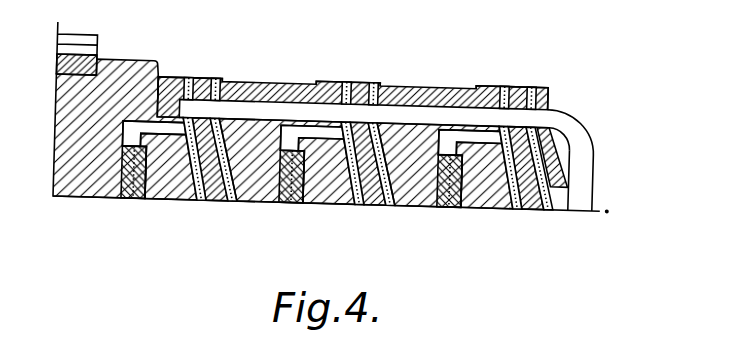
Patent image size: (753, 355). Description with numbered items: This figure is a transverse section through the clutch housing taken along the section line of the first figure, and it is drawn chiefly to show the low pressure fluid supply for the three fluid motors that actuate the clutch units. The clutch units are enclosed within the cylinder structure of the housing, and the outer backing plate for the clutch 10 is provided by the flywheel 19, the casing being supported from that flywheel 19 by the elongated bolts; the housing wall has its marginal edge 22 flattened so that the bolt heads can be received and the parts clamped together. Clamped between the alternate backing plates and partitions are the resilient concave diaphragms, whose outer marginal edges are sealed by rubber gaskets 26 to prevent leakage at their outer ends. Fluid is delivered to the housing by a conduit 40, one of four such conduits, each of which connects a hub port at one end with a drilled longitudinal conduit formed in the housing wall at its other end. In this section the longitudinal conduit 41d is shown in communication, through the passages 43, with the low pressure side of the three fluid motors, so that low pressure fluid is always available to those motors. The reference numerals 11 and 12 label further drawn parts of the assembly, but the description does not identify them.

The clutch 10 is at (128, 197).
The packing ring 11 is at (288, 203).
The packing ring 12 is at (448, 207).
The flywheel 19 is at (87, 183).
The marginal edge 22 is at (545, 88).
The rubber gasket 26 is at (183, 72).
The conduit 40 is at (550, 174).
The longitudinal conduit 41d is at (416, 102).
The passage 43 is at (196, 116).